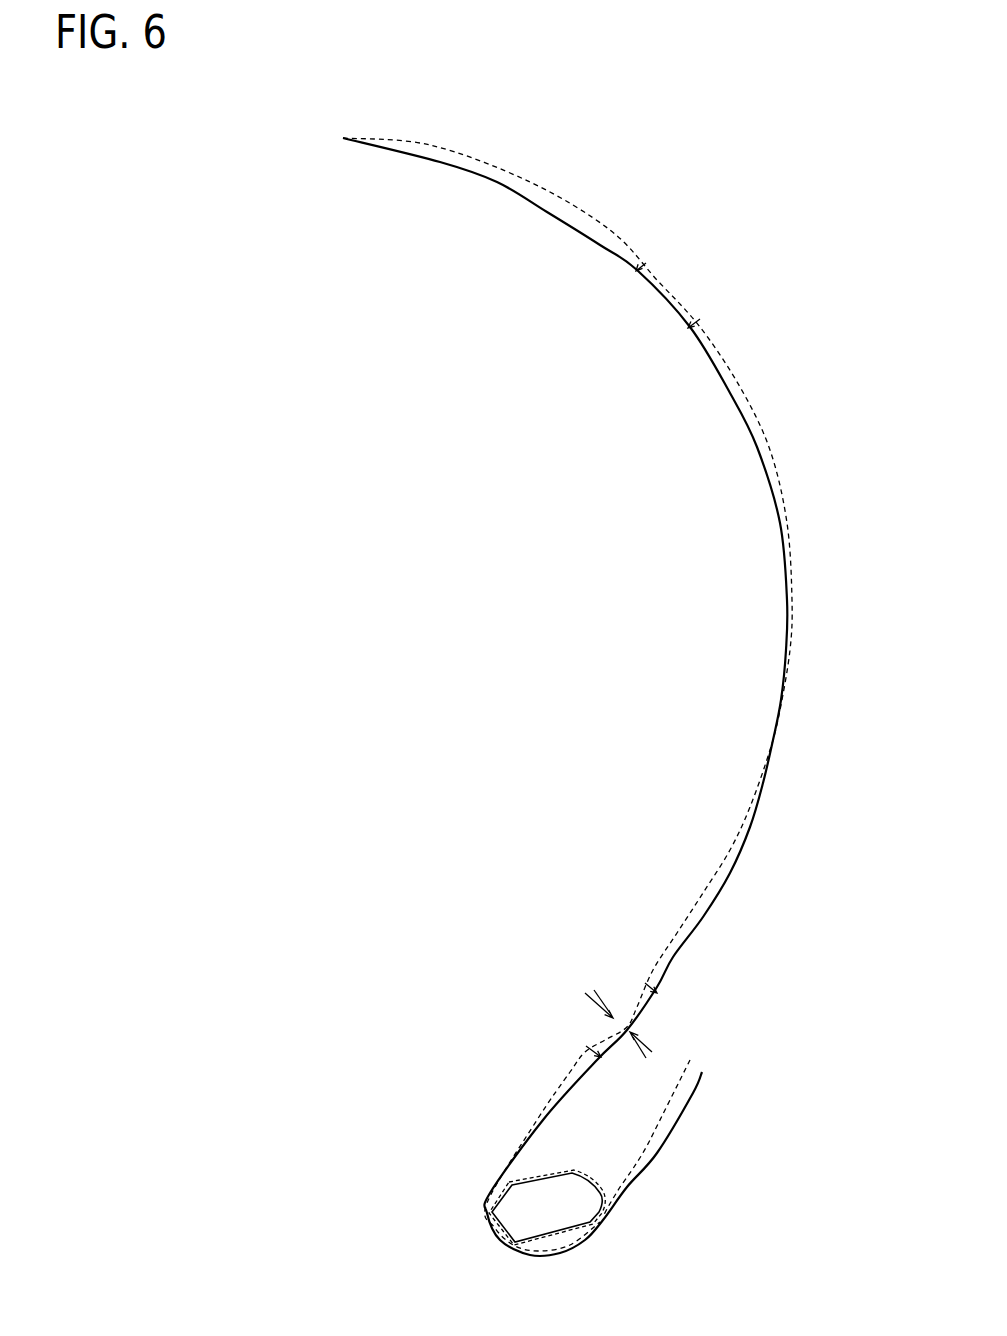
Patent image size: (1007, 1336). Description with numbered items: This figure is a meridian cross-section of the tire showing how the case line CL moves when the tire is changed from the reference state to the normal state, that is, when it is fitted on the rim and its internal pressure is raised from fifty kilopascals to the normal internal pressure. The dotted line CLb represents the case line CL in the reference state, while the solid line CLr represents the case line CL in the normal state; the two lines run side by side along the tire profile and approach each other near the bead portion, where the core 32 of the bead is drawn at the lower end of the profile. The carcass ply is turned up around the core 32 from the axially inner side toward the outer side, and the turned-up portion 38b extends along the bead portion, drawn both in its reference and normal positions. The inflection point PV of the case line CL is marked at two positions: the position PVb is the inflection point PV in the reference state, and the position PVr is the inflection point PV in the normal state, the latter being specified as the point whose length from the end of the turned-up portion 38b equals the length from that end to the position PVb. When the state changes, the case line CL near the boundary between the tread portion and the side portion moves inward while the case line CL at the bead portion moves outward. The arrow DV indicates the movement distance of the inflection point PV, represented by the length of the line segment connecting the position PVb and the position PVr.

The case line CL is at (567, 697).
The solid line representing the case line in the normal state CLr is at (600, 245).
The dotted line representing the case line in the reference state CLb is at (672, 288).
The inflection point PV is at (626, 1016).
The position of the inflection point in the normal state PVr is at (631, 1030).
The position of the inflection point in the reference state PVb is at (607, 1025).
The movement distance of the inflection point DV is at (617, 1022).
The turned-up portion 38b is at (688, 1088).
The core 32 is at (495, 1228).